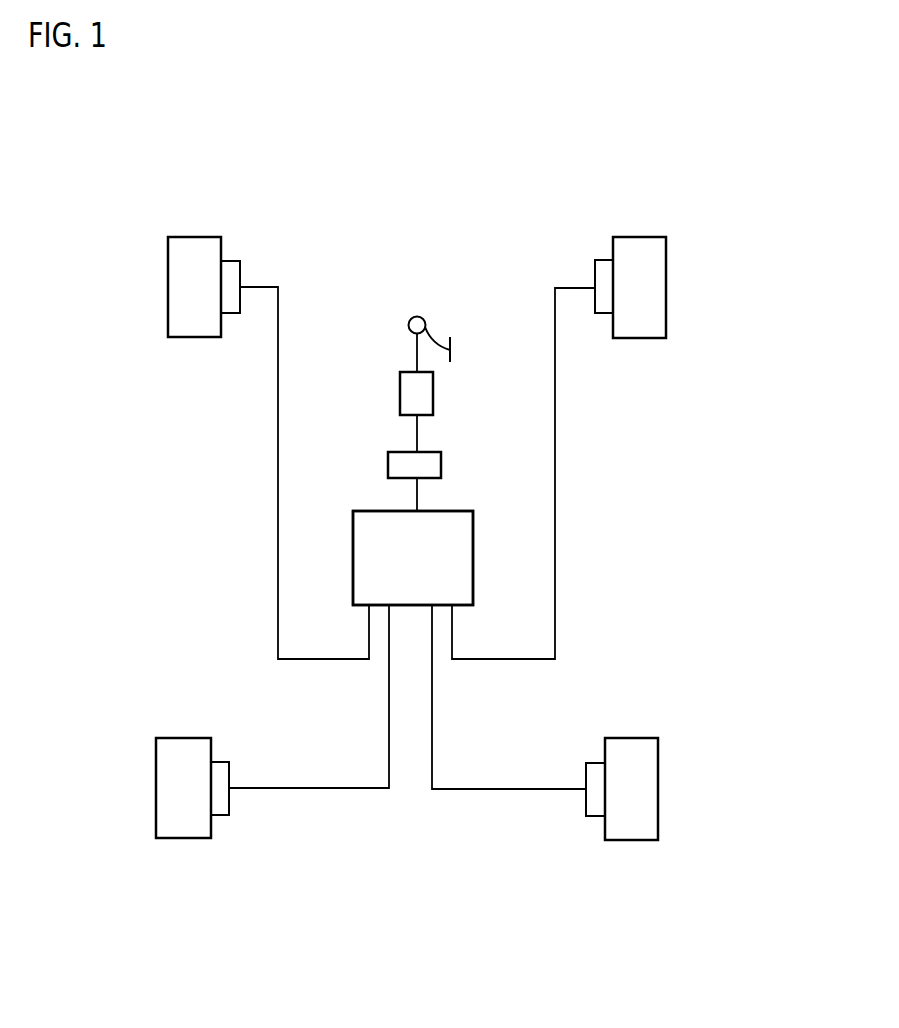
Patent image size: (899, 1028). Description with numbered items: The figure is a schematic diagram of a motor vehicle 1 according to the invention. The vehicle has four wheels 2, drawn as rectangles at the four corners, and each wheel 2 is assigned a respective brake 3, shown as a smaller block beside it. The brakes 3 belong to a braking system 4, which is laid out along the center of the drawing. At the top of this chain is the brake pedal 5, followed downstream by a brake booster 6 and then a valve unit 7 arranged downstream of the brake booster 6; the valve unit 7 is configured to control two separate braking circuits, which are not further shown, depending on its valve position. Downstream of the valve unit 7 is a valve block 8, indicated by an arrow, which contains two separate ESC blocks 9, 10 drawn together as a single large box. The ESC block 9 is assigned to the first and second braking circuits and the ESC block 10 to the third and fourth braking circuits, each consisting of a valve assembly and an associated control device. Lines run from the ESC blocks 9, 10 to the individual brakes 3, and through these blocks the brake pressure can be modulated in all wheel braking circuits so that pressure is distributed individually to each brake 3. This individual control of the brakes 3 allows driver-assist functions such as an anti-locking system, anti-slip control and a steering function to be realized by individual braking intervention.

The motor vehicle 1 is at (540, 174).
The wheels 2 is at (167, 285).
The brake 3 is at (242, 268).
The braking system 4 is at (600, 458).
The brake pedal 5 is at (432, 337).
The brake booster 6 is at (397, 392).
The valve unit 7 is at (385, 463).
The valve block 8 is at (473, 475).
The ESC block 9 is at (473, 550).
The ESC block 10 is at (473, 550).